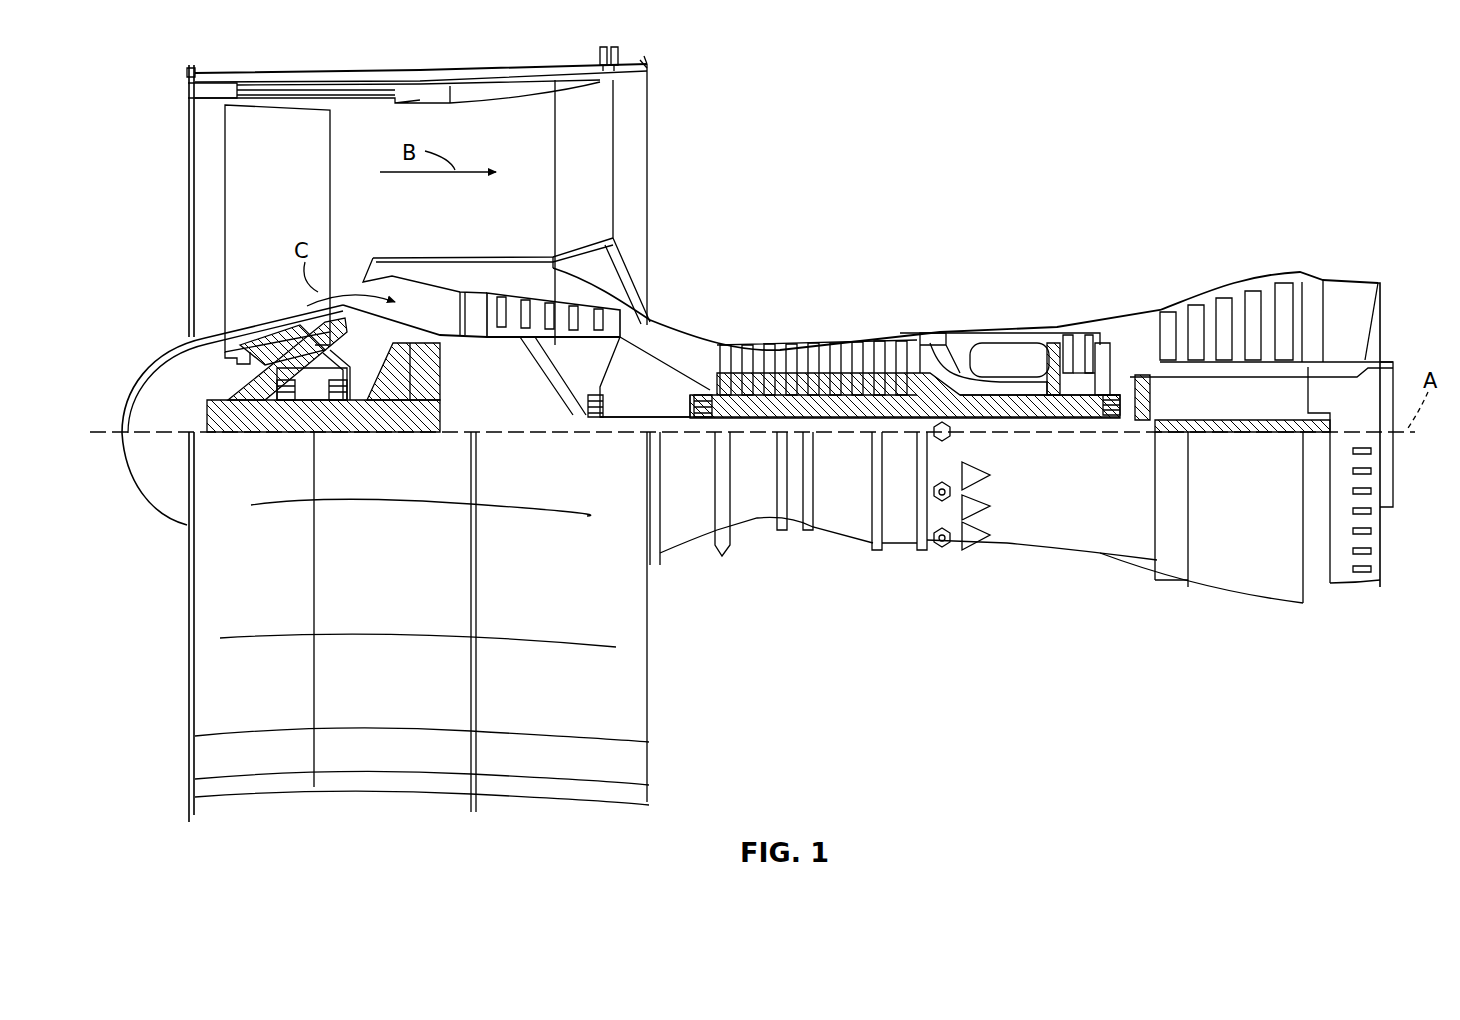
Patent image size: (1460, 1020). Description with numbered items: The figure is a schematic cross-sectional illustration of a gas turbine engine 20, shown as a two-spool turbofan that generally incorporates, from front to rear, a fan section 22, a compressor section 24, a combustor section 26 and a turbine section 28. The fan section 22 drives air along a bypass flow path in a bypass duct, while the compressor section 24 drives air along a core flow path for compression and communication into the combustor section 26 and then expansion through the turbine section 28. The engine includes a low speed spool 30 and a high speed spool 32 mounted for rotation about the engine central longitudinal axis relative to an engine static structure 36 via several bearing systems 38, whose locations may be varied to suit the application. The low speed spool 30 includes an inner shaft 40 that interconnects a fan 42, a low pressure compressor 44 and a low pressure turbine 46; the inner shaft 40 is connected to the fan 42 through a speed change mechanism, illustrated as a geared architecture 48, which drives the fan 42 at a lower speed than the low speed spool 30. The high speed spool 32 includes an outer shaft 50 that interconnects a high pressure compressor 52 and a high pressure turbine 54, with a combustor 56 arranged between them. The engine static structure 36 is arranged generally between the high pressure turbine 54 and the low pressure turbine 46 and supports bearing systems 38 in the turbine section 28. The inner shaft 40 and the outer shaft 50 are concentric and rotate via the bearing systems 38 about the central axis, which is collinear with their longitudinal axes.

The gas turbine engine 20 is at (1262, 84).
The fan section 22 is at (291, 66).
The compressor section 24 is at (822, 240).
The combustor section 26 is at (1012, 222).
The turbine section 28 is at (1164, 215).
The low speed spool 30 is at (862, 440).
The high speed spool 32 is at (940, 333).
The engine static structure 36 is at (900, 552).
The bearing systems 38 is at (272, 425).
The inner shaft 40 is at (667, 435).
The fan 42 is at (290, 215).
The low pressure compressor 44 is at (568, 307).
The low pressure turbine 46 is at (1243, 283).
The geared architecture 48 is at (420, 428).
The outer shaft 50 is at (1004, 440).
The high pressure compressor 52 is at (795, 385).
The high pressure turbine 54 is at (1077, 330).
The combustor 56 is at (1006, 343).